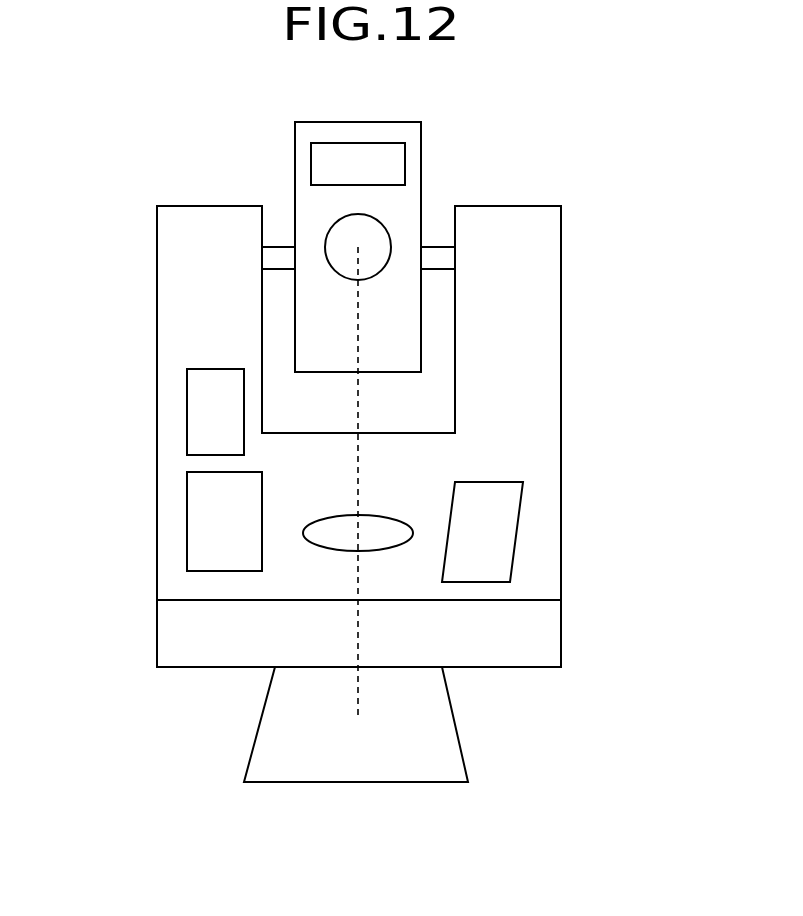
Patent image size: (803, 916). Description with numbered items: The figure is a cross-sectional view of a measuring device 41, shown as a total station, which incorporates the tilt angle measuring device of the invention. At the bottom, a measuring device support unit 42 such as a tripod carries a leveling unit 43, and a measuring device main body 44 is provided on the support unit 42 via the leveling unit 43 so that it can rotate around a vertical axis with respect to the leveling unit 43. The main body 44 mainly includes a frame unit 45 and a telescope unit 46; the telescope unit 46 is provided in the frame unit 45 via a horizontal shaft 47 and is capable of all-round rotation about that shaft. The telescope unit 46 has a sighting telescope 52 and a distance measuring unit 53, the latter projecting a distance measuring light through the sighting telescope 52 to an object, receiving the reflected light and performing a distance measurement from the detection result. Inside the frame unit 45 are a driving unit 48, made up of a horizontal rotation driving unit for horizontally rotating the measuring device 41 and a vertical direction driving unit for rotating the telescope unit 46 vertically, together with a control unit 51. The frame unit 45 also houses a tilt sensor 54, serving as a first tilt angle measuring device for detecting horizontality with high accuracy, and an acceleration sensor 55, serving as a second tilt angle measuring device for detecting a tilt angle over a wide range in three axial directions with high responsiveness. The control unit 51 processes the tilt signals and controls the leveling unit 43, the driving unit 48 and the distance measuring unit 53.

The measuring device 41 is at (373, 93).
The measuring device support unit 42 is at (452, 719).
The leveling unit 43 is at (560, 619).
The measuring device main body 44 is at (562, 315).
The frame unit 45 is at (560, 432).
The telescope unit 46 is at (404, 122).
The horizontal shaft 47 is at (433, 247).
The driving unit 48 is at (187, 380).
The control unit 51 is at (187, 490).
The sighting telescope 52 is at (385, 223).
The distance measuring unit 53 is at (310, 155).
The tilt sensor 54 is at (375, 515).
The acceleration sensor 55 is at (484, 482).